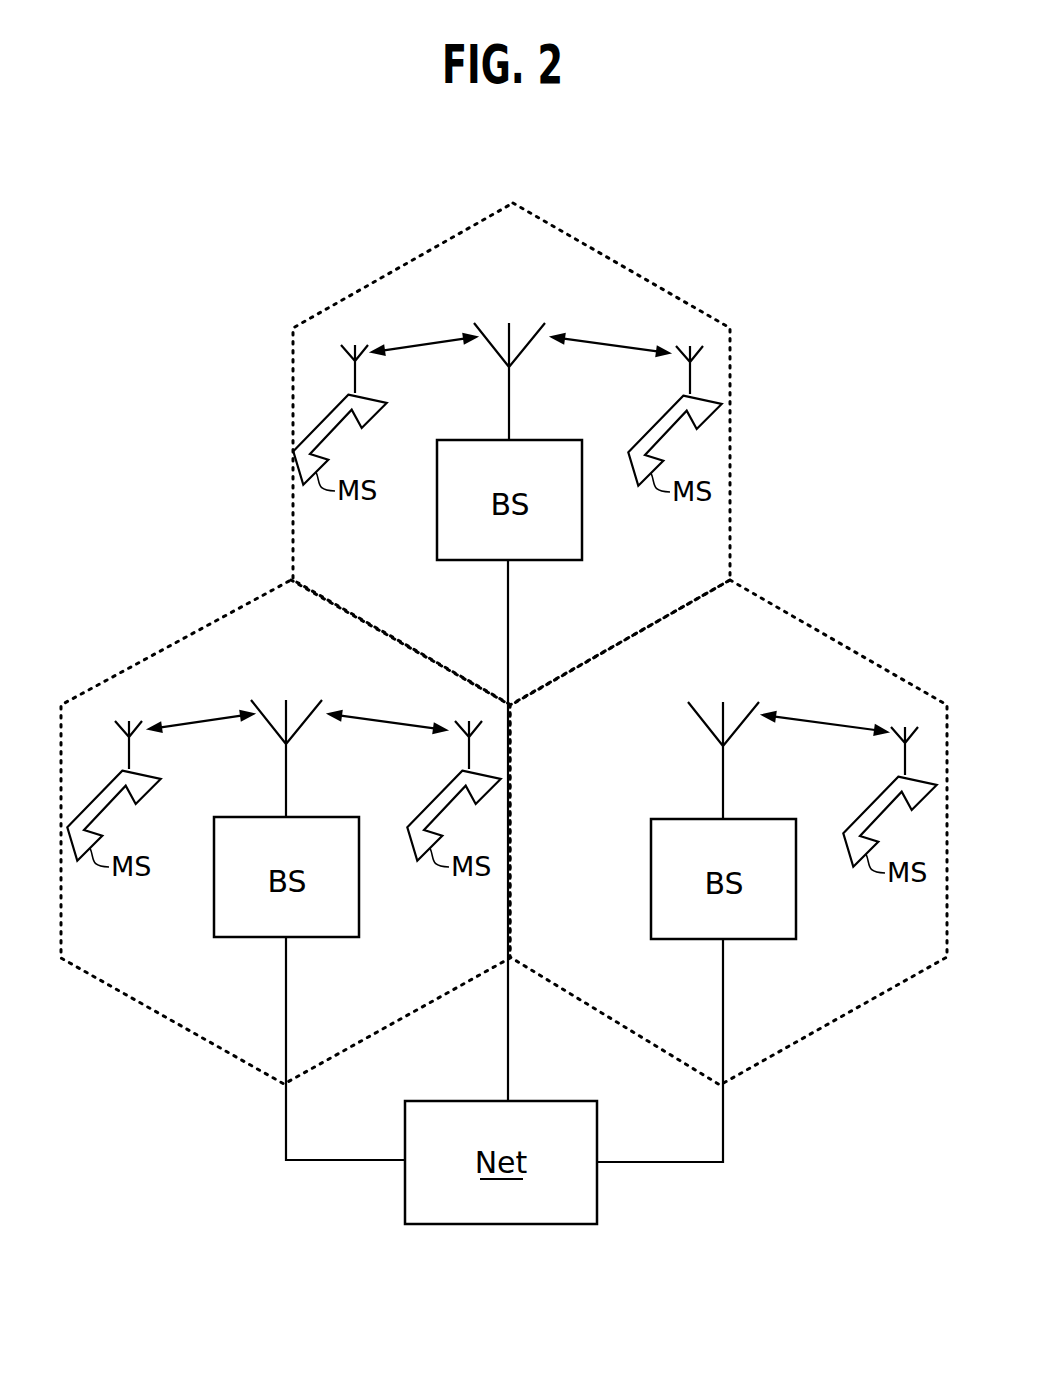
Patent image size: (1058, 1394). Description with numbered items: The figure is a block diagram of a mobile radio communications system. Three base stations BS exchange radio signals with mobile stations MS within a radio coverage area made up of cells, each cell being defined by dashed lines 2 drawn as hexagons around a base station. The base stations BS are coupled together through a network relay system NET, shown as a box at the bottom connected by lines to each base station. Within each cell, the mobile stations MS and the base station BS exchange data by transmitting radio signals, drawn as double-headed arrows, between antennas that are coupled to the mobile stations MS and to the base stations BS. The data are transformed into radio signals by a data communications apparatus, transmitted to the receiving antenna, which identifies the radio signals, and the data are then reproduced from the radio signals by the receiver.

The dashed line 2 is at (177, 1023).